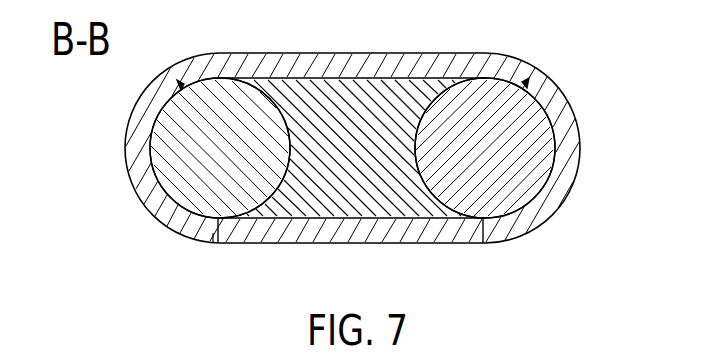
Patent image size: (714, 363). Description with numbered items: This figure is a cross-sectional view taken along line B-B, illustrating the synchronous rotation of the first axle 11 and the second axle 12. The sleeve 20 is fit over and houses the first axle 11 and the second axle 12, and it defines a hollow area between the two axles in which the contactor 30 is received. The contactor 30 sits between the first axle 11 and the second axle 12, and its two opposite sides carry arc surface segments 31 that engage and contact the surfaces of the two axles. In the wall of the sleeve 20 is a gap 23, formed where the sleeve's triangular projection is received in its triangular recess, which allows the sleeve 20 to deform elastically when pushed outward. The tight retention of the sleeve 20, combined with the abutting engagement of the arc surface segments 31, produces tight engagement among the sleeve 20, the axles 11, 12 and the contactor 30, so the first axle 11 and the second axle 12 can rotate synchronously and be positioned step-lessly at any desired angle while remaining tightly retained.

The first axle 11 is at (180, 86).
The second axle 12 is at (527, 82).
The sleeve 20 is at (573, 140).
The gap 23 is at (213, 236).
The contactor 30 is at (346, 106).
The arc surface segments 31 is at (289, 134).